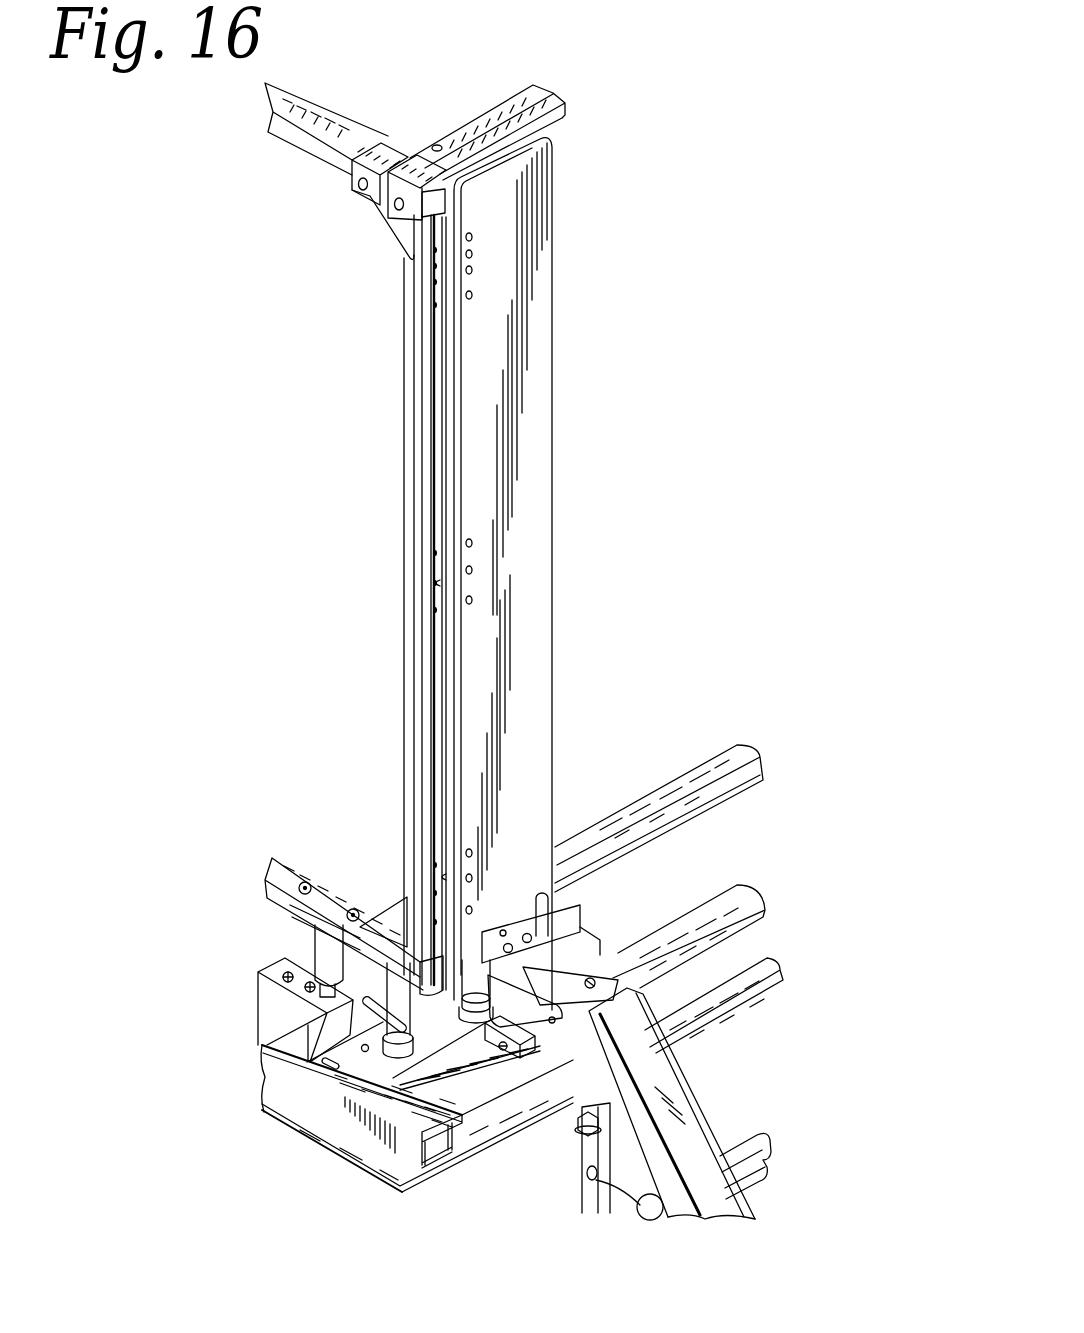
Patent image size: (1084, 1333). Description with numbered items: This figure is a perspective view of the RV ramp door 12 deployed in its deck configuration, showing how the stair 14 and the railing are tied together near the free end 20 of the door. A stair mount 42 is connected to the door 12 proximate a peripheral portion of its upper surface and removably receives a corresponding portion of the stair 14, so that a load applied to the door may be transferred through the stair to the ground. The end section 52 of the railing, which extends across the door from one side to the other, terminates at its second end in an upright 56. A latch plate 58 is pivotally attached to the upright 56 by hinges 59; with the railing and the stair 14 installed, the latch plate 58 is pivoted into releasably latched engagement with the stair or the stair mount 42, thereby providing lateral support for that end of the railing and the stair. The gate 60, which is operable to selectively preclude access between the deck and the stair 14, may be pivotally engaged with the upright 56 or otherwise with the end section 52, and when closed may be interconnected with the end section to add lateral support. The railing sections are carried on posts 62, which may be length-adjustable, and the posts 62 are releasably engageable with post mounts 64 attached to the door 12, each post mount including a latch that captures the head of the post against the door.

The ramp door 12 is at (330, 1100).
The stair 14 is at (798, 973).
The second (free) end 20 is at (220, 1066).
The stair mount 42 is at (563, 1050).
The end section 52 is at (310, 152).
The upright 56 is at (410, 383).
The latch plate 58 is at (547, 633).
The hinges 59 is at (391, 272).
The gate 60 is at (447, 128).
The posts 62 is at (330, 948).
The post mounts 64 is at (280, 1012).